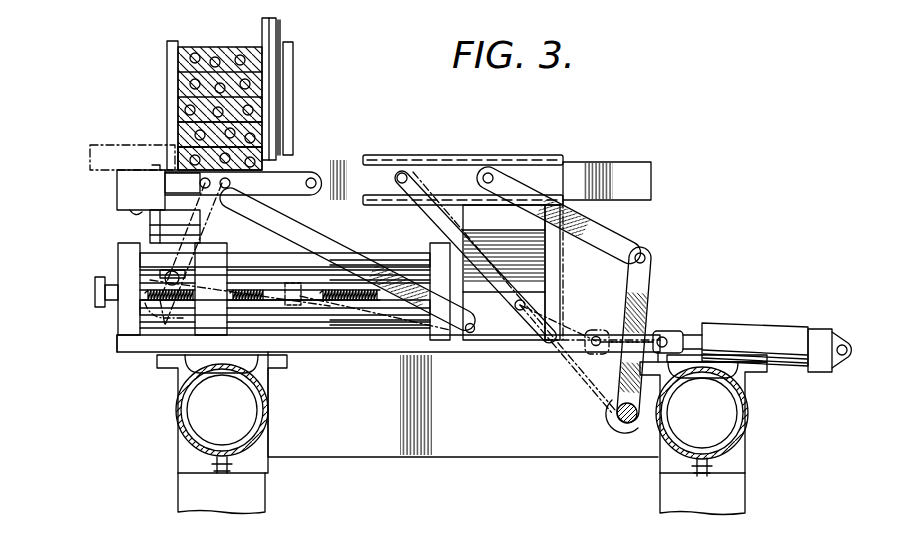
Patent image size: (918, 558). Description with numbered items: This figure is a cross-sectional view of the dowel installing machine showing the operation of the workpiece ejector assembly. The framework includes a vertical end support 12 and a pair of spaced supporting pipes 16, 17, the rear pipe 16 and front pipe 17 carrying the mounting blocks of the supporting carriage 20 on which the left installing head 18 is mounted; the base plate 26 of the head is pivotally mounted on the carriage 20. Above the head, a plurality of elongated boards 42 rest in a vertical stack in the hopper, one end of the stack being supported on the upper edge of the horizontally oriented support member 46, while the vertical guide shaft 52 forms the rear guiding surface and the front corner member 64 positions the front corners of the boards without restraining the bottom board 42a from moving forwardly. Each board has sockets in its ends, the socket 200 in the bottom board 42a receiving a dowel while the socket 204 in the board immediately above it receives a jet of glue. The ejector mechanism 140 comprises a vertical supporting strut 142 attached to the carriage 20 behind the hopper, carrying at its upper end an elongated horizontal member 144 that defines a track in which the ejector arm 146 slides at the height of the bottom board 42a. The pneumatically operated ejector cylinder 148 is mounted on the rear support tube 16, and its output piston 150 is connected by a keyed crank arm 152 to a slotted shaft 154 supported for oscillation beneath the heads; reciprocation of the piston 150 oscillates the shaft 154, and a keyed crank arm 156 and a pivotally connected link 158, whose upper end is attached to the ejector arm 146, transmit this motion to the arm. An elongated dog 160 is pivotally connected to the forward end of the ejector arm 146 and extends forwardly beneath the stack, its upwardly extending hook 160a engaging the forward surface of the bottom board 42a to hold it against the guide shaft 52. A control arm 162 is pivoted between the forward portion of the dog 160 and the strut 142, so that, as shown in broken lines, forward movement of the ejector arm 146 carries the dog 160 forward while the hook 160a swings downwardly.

The vertical end support 12 is at (660, 497).
The rear supporting pipe 16 is at (745, 414).
The front supporting pipe 17 is at (262, 414).
The left installing head 18 is at (112, 252).
The supporting carriage 20 is at (352, 350).
The base plate 26 is at (117, 340).
The boards 42 is at (236, 45).
The bottom board 42a is at (90, 143).
The horizontally oriented support member 46 is at (117, 184).
The vertical guide shaft 52 is at (284, 26).
The front corner member 64 is at (167, 80).
The ejector mechanism 140 is at (560, 158).
The supporting strut 142 is at (545, 282).
The elongated horizontal member 144 is at (430, 154).
The ejector arm 146 is at (470, 165).
The ejector cylinder 148 is at (760, 322).
The output piston 150 is at (682, 332).
The keyed crank arm 152 is at (592, 380).
The slotted shaft 154 is at (615, 420).
The keyed crank arm 156 is at (649, 292).
The link 158 is at (460, 230).
The elongated dog 160 is at (185, 210).
The hook 160a is at (176, 168).
The control arm 162 is at (330, 244).
The socket 200 is at (178, 137).
The socket 204 is at (178, 114).